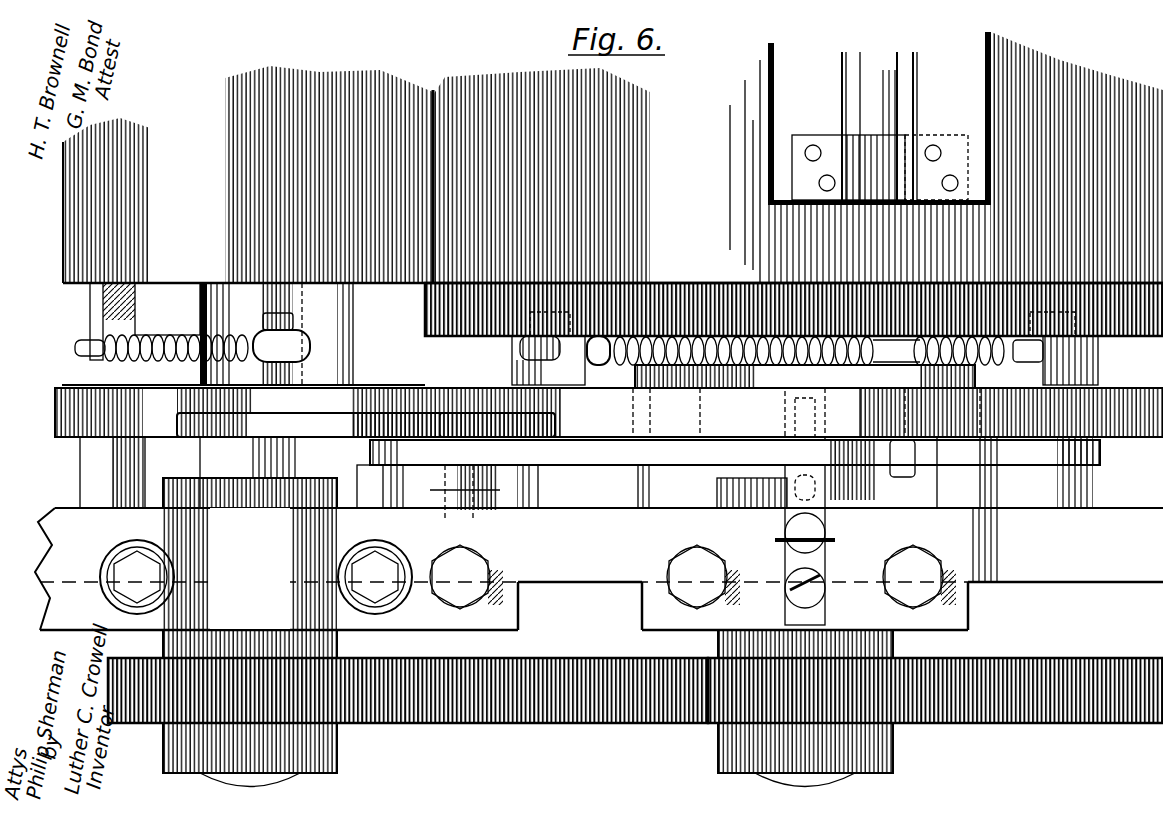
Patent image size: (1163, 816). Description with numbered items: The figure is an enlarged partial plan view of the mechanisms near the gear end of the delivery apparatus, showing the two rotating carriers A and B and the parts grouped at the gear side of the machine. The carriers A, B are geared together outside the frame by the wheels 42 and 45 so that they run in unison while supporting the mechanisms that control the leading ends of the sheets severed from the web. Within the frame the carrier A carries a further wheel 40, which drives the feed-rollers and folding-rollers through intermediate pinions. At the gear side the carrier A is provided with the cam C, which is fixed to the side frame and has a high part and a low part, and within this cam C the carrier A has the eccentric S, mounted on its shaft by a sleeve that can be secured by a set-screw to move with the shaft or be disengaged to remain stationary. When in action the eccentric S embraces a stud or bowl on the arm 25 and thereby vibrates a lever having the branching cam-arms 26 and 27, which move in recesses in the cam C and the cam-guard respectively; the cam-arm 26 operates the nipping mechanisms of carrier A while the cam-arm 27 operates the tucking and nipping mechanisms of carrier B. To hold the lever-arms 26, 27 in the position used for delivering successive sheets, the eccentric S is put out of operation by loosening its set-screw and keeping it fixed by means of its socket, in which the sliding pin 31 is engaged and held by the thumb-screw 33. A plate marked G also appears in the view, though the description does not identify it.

The arm 25 is at (735, 470).
The cam-arm 26 is at (497, 425).
The cam-arm 27 is at (366, 425).
The sliding pin 31 is at (805, 413).
The thumb-screw 33 is at (790, 540).
The wheel 40 is at (1127, 340).
The wheel 42 is at (1008, 728).
The wheel 45 is at (385, 730).
The carrier A is at (798, 157).
The carrier B is at (248, 174).
The cam C is at (710, 412).
The plate G is at (609, 412).
The eccentric S is at (805, 362).